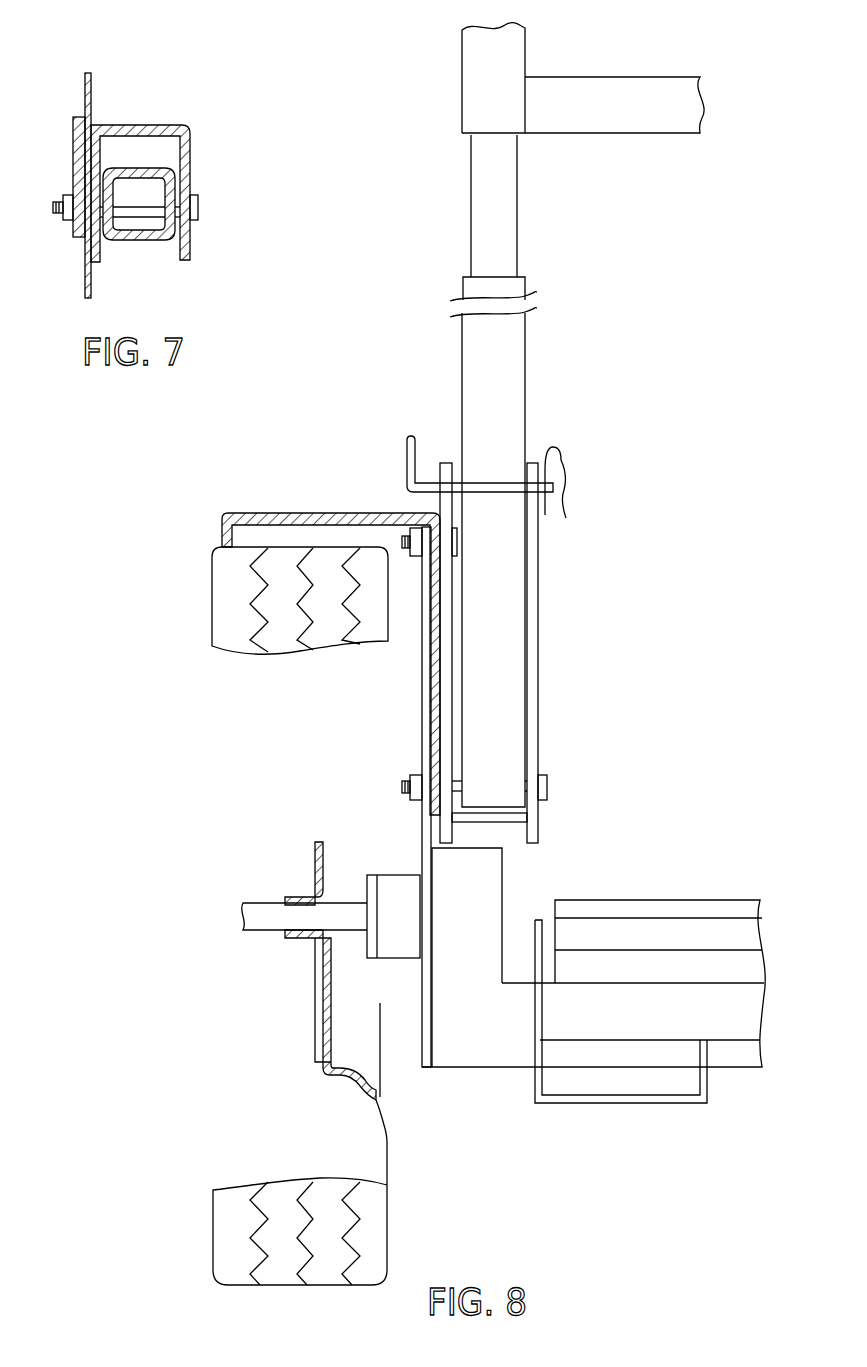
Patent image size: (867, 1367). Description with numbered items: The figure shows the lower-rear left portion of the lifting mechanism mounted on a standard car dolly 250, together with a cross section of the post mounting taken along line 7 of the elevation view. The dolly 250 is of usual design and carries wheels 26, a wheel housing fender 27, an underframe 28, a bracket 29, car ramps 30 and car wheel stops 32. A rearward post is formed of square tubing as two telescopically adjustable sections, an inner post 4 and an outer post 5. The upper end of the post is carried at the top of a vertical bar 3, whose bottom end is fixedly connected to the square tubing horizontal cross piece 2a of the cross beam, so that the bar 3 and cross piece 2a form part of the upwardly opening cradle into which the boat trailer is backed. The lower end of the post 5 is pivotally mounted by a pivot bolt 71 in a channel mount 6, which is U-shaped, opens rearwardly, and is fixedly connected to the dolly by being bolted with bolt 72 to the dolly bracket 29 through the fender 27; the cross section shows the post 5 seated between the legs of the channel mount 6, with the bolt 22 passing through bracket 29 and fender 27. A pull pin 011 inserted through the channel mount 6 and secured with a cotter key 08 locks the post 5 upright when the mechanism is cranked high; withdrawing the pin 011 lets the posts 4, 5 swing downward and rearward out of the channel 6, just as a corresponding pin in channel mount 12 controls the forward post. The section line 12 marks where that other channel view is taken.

In FIG. 8, the horizontal cross piece 2a is at (563, 77).
In FIG. 8, the vertical bar 3 is at (462, 62).
In FIG. 8, the rearward post 4 is at (518, 204).
In FIG. 7, the rearward post 5 is at (129, 169).
In FIG. 8, the rearward post 5 is at (526, 386).
In FIG. 7, the channel mount 6 is at (191, 178).
In FIG. 8, the channel mount 6 is at (539, 623).
In FIG. 8, the section line 7— 7 is at (410, 705).
In FIG. 8, the channel mount 12 is at (435, 343).
In FIG. 8, the pull pin 011 is at (405, 440).
In FIG. 8, the cotter key 08 is at (562, 449).
In FIG. 7, the bolt 22 is at (64, 218).
In FIG. 8, the bolt 22 is at (412, 530).
In FIG. 8, the wheel 26 is at (212, 579).
In FIG. 7, the fender 27 is at (86, 96).
In FIG. 8, the fender 27 is at (222, 521).
In FIG. 8, the underframe 28 is at (478, 1067).
In FIG. 7, the bracket 29 is at (73, 155).
In FIG. 8, the bracket 29 is at (422, 693).
In FIG. 8, the car ramp 30 is at (637, 1042).
In FIG. 8, the car wheel stop 32 is at (640, 898).
In FIG. 7, the pivot bolt 71 is at (199, 208).
In FIG. 8, the pivot bolt 71 is at (548, 791).
In FIG. 8, the bolt 72 is at (402, 542).
In FIG. 8, the car dolly 250 is at (277, 484).